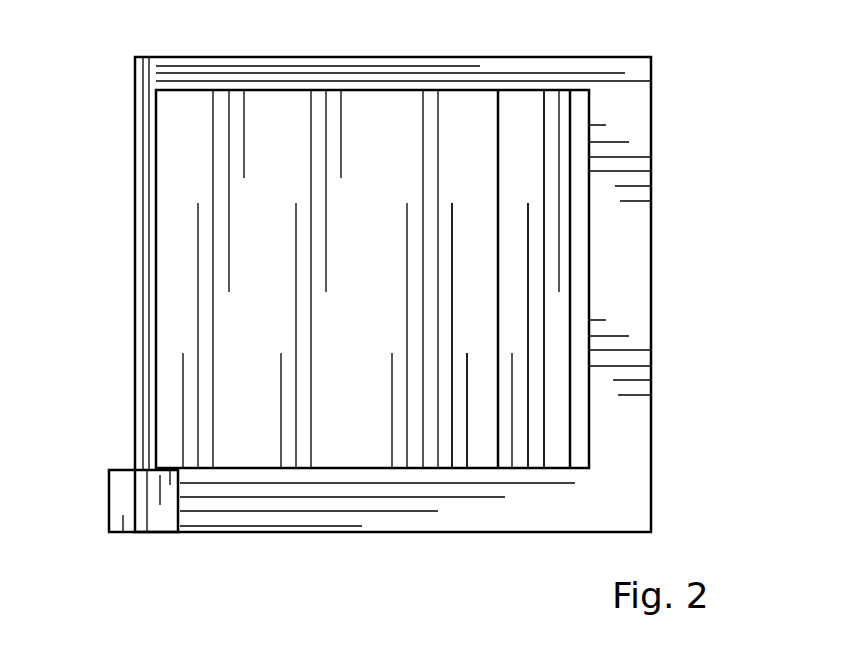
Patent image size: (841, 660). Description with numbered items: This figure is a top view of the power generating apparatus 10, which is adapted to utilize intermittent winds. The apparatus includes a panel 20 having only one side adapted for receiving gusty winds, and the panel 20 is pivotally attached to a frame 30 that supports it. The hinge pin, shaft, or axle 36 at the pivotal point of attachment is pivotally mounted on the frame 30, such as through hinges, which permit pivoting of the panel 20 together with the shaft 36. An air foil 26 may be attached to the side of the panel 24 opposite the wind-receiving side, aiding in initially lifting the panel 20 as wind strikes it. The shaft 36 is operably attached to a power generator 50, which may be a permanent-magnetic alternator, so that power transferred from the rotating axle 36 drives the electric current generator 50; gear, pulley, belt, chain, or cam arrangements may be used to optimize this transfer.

The power generating apparatus 10 is at (86, 124).
The panel 20 is at (275, 162).
The side of the panel 24 is at (475, 125).
The air foil 26 is at (528, 153).
The frame 30 is at (353, 515).
The shaft 36 is at (146, 352).
The power generator 50 is at (127, 500).